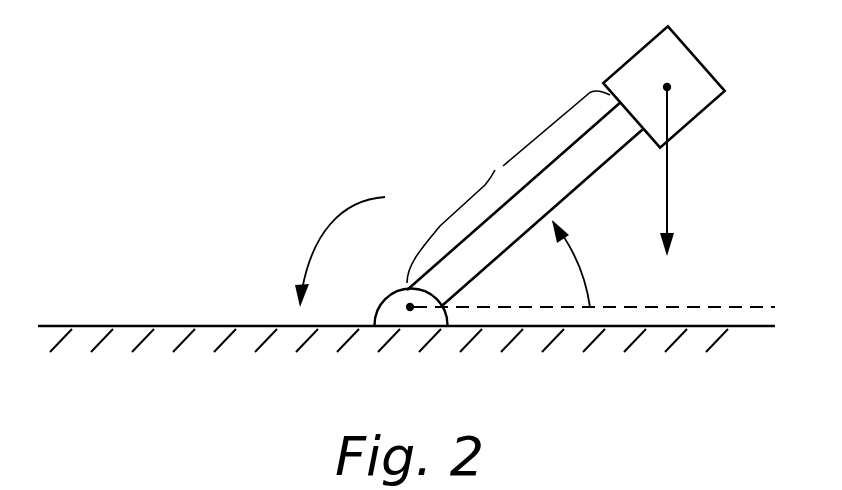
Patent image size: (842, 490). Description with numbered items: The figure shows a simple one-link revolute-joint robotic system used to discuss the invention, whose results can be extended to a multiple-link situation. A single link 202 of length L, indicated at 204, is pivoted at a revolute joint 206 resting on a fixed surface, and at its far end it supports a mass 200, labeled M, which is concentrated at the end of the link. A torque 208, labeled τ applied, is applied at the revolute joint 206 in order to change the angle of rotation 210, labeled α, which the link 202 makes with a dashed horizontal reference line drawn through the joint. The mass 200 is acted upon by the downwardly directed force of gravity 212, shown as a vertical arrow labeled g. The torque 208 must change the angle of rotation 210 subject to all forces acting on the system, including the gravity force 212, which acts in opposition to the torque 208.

The mass 200 is at (678, 38).
The link 202 is at (573, 145).
The link length L 204 is at (480, 152).
The revolute joint 206 is at (411, 312).
The applied torque 208 is at (255, 167).
The angle of rotation 210 is at (600, 262).
The gravity force 212 is at (667, 177).